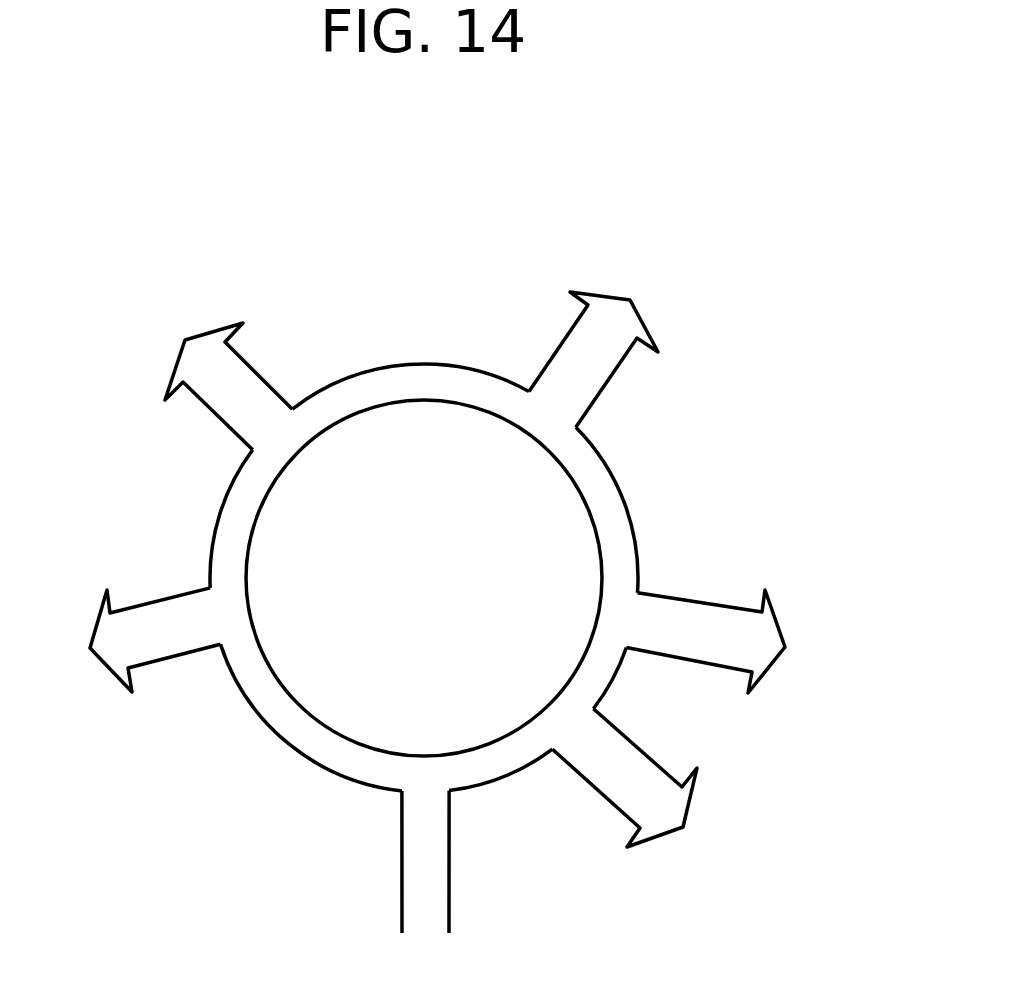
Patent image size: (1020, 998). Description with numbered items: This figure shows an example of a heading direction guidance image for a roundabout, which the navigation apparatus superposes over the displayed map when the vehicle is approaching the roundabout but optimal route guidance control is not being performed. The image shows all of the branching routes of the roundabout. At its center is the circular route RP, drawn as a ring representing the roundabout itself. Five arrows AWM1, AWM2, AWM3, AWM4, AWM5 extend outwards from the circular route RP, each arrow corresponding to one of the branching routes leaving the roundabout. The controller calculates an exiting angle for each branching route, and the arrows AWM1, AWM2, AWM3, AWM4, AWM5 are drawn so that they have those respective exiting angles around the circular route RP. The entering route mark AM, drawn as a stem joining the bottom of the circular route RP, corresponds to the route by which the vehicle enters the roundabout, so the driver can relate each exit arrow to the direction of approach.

The circular route RP is at (623, 518).
The entering route mark AM is at (398, 888).
The arrow AWM1 is at (603, 797).
The arrow AWM2 is at (697, 613).
The arrow AWM3 is at (567, 335).
The arrow AWM4 is at (257, 383).
The arrow AWM5 is at (163, 607).